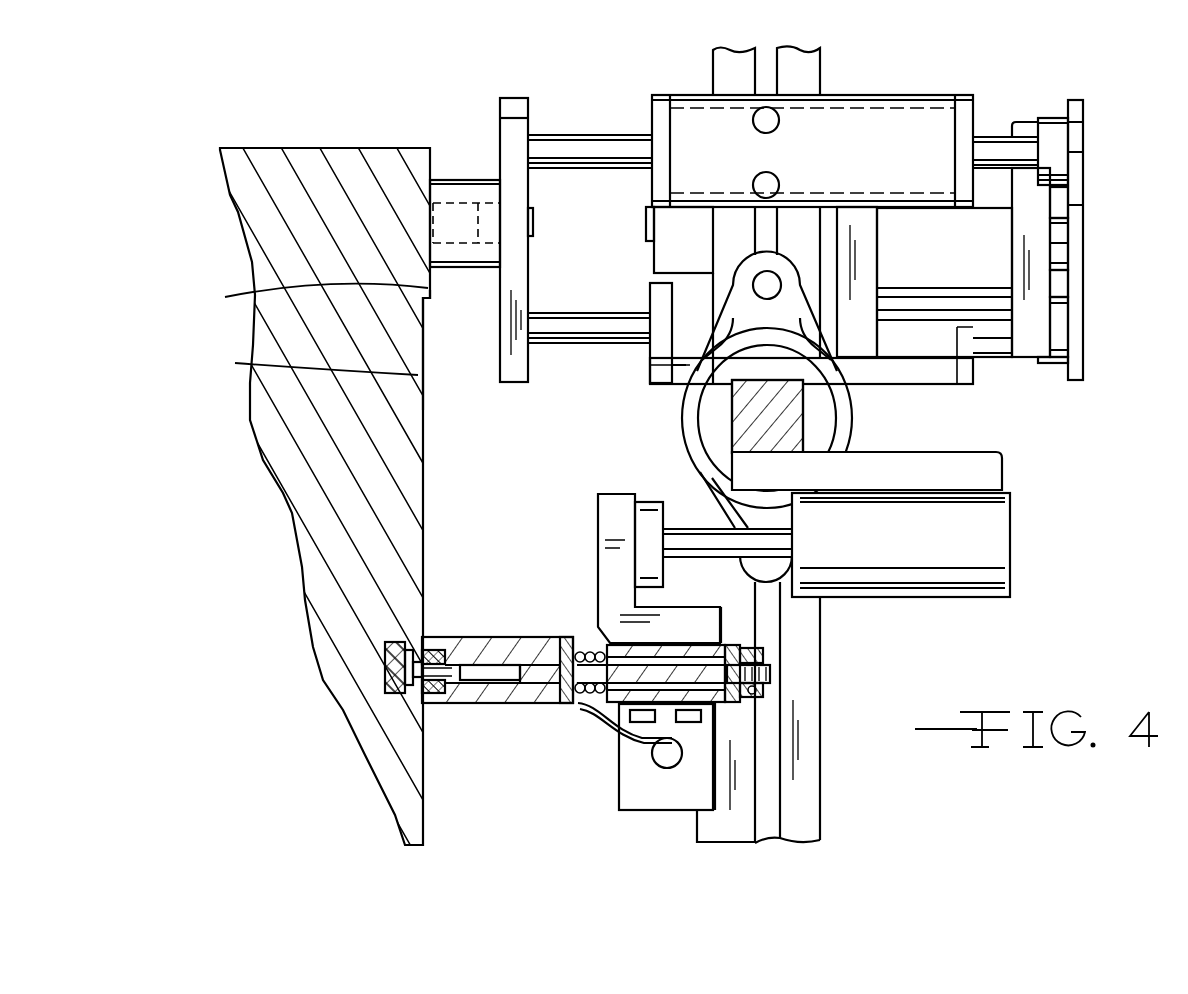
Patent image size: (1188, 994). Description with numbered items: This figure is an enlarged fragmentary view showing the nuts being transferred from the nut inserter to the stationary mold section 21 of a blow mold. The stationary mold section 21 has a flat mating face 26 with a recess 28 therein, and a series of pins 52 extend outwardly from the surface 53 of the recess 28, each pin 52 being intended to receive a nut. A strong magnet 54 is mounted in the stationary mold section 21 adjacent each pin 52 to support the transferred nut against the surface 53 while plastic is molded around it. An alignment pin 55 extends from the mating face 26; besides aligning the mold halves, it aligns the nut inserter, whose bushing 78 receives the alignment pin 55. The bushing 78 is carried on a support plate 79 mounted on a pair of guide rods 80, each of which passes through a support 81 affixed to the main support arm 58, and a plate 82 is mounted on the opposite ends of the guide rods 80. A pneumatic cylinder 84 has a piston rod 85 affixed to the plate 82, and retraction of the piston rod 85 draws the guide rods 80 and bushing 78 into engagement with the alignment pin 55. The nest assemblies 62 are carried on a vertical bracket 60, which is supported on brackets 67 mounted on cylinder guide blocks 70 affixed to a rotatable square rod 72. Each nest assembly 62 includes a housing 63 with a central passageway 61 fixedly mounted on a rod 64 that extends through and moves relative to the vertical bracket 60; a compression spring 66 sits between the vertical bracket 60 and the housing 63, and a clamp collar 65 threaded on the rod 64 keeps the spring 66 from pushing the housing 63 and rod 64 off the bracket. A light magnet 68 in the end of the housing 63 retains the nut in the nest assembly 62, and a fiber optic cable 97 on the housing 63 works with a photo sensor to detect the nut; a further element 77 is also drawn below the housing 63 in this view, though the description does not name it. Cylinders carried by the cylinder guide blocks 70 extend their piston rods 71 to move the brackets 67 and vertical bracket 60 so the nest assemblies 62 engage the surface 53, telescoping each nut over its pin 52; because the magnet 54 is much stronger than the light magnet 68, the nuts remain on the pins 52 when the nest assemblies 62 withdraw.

The stationary mold section 21 is at (305, 157).
The mating face 26 is at (304, 300).
The recess 28 is at (301, 366).
The surface 53 is at (425, 407).
The alignment pin 55 is at (453, 225).
The bushing 78 is at (457, 178).
The support plate 79 is at (510, 357).
The guide rods 80 is at (572, 137).
The support 81 is at (878, 160).
The pneumatic cylinder 84 is at (950, 263).
The piston rod 85 is at (1060, 235).
The plate 82 is at (1077, 319).
The square rod 72 is at (797, 417).
The cylinder guide block 70 is at (912, 550).
The piston rod 71 is at (688, 542).
The bracket 67 is at (613, 507).
The vertical bracket 60 is at (640, 643).
The compression spring 66 is at (590, 657).
The clamp collar 65 is at (763, 652).
The pin 52 is at (450, 662).
The housing 63 is at (485, 640).
The light magnet 68 is at (440, 697).
The central passageway 61 is at (482, 675).
The rod 64 is at (543, 677).
The magnet 54 is at (385, 670).
The nest assembly 62 is at (583, 727).
The fiber optic cable 97 is at (618, 740).
The sensor 77 is at (665, 797).
The main support arm 58 is at (807, 763).